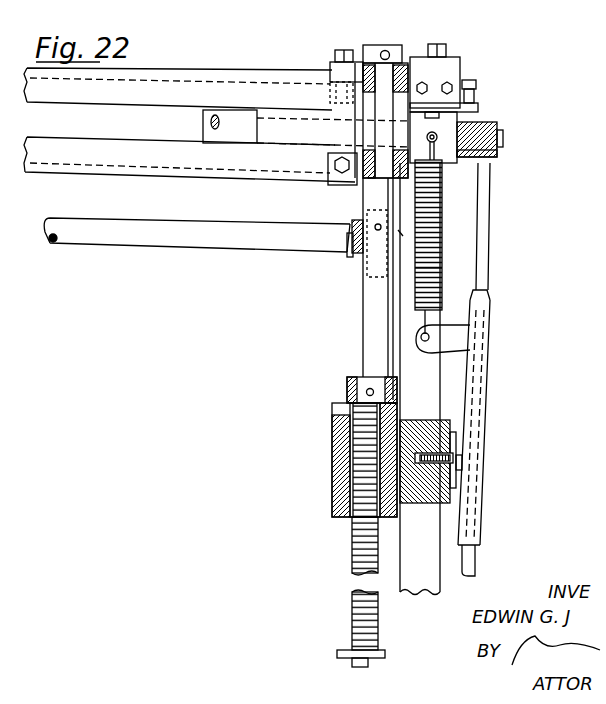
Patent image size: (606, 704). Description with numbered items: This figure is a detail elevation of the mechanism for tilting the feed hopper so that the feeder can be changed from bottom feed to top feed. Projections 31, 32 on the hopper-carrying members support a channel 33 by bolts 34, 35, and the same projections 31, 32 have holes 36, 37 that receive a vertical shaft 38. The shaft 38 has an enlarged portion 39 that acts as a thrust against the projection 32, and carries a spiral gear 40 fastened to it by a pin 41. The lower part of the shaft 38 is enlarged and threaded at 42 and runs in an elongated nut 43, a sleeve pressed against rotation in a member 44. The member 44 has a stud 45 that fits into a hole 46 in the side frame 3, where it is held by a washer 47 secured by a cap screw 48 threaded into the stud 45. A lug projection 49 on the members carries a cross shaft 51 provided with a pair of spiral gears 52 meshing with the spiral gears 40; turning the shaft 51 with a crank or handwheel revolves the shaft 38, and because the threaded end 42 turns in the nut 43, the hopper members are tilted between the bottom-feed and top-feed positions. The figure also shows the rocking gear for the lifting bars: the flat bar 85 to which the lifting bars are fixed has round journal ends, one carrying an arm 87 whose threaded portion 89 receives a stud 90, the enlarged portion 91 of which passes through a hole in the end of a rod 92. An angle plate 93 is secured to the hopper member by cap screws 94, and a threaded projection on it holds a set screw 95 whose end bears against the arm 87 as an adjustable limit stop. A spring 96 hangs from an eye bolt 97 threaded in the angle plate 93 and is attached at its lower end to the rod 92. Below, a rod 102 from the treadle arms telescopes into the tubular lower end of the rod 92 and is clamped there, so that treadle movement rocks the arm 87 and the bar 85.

The side frame 3 is at (420, 595).
The projection 31 is at (330, 70).
The projection 32 is at (345, 185).
The channel 33 is at (104, 170).
The bolt 34 is at (335, 55).
The bolt 35 is at (330, 170).
The hole 36 is at (375, 45).
The hole 37 is at (375, 186).
The shaft 38 is at (375, 130).
The enlarged portion 39 is at (430, 214).
The spiral gear 40 is at (350, 246).
The pin 41 is at (402, 233).
The threaded portion 42 is at (350, 572).
The elongated nut 43 is at (350, 468).
The member 44 is at (332, 436).
The stud 45 is at (420, 420).
The hole 46 is at (456, 432).
The washer 47 is at (458, 453).
The cap screw 48 is at (462, 470).
The lug projection 49 is at (425, 268).
The shaft 51 is at (125, 244).
The spiral gears 52 is at (352, 260).
The flat bar 85 is at (209, 118).
The arm 87 is at (493, 120).
The threaded portion 89 is at (470, 160).
The stud 90 is at (490, 152).
The enlarged portion 91 is at (490, 137).
The rod 92 is at (482, 200).
The angle plate 93 is at (442, 80).
The cap screws 94 is at (420, 84).
The set screw 95 is at (476, 92).
The spring 96 is at (425, 298).
The eye bolt 97 is at (478, 106).
The rod 102 is at (478, 558).